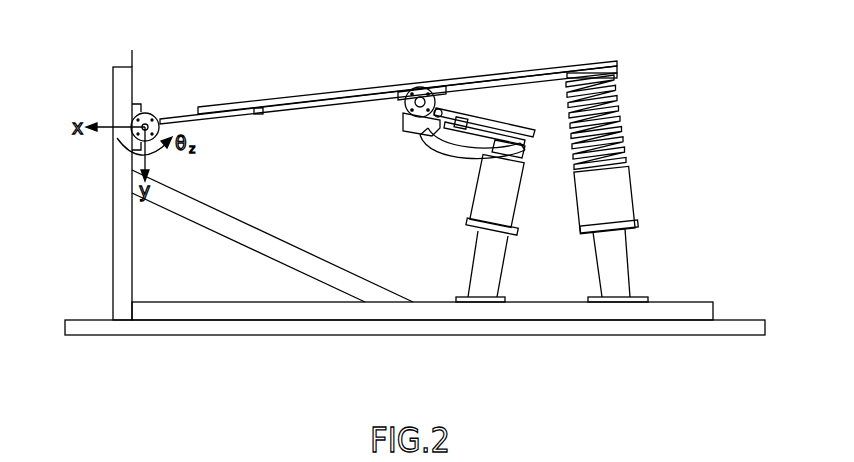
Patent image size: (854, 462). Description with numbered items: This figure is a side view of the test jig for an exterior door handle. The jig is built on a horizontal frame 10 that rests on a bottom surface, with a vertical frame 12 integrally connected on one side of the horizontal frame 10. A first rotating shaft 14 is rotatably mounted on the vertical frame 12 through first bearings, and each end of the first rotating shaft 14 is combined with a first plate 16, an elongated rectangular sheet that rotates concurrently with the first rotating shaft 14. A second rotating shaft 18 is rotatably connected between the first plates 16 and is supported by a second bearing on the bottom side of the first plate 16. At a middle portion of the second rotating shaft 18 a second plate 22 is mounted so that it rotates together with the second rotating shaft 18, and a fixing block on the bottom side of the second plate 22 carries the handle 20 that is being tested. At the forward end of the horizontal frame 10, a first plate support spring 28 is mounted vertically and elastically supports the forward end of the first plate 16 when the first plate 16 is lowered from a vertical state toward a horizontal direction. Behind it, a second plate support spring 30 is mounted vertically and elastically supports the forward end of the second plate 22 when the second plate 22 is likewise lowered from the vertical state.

The horizontal frame 10 is at (220, 312).
The vertical frame 12 is at (122, 272).
The first rotating shaft 14 is at (150, 113).
The first plate 16 is at (262, 96).
The second rotating shaft 18 is at (420, 87).
The handle 20 is at (455, 148).
The second plate 22 is at (485, 108).
The first plate support spring 28 is at (615, 113).
The second plate support spring 30 is at (510, 207).